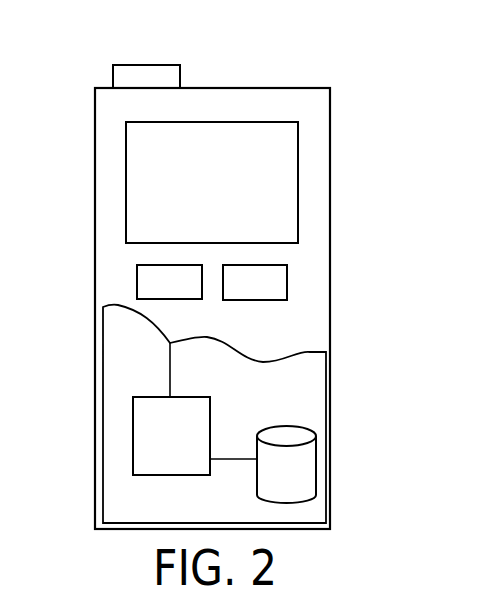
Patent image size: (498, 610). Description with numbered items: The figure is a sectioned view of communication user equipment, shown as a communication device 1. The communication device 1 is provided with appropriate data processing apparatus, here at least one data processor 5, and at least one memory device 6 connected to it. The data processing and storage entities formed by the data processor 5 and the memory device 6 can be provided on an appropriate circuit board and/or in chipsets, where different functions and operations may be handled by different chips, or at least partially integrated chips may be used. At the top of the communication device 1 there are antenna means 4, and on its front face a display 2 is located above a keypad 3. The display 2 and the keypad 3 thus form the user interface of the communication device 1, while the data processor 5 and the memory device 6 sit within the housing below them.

The communication device 1 is at (101, 98).
The display 2 is at (285, 136).
The keypad 3 is at (148, 280).
The antenna means 4 is at (161, 79).
The data processor 5 is at (145, 410).
The memory device 6 is at (305, 461).